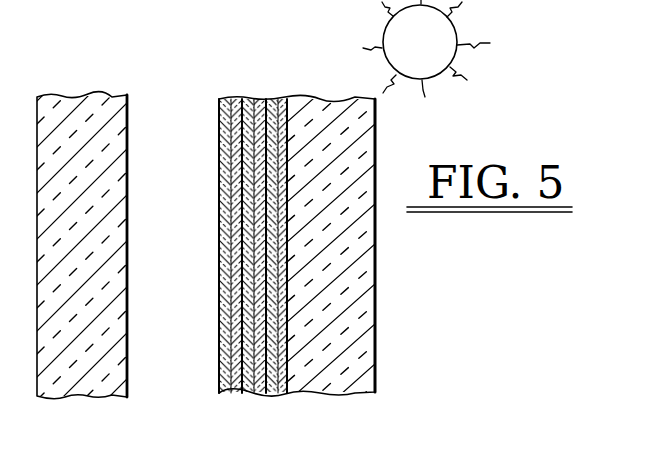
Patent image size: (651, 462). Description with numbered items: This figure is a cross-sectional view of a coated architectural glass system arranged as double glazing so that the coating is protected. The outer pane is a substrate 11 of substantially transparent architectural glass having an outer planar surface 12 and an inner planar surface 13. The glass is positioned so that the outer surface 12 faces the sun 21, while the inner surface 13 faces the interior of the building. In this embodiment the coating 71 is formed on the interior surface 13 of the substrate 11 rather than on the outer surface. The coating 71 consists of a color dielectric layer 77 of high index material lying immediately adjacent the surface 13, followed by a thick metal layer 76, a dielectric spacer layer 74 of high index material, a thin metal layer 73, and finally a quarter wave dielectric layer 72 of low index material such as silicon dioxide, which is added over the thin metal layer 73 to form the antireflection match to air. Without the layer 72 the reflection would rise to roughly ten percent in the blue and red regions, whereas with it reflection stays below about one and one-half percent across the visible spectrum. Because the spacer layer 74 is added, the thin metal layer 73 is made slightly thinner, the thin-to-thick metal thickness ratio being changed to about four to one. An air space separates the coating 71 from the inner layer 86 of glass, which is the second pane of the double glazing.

The substrate 11 is at (352, 110).
The outer planar surface 12 is at (379, 258).
The inner planar surface 13 is at (253, 247).
The sun 21 is at (408, 57).
The coating 71 is at (298, 93).
The quarter wave dielectric layer 72 is at (222, 360).
The thin metal layer 73 is at (232, 390).
The dielectric spacer layer 74 is at (247, 393).
The thick metal layer 76 is at (258, 393).
The color dielectric layer 77 is at (285, 382).
The inner layer of glass 86 is at (78, 108).